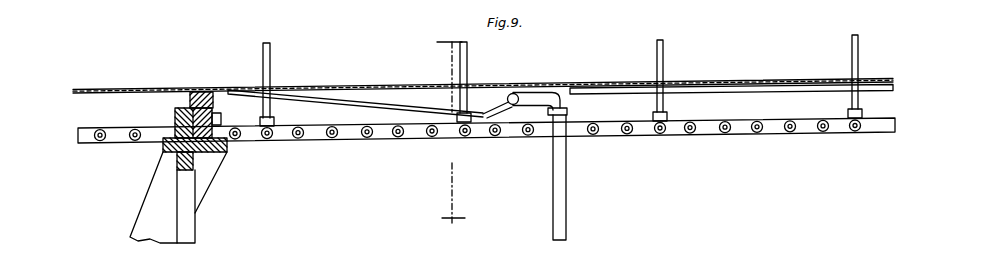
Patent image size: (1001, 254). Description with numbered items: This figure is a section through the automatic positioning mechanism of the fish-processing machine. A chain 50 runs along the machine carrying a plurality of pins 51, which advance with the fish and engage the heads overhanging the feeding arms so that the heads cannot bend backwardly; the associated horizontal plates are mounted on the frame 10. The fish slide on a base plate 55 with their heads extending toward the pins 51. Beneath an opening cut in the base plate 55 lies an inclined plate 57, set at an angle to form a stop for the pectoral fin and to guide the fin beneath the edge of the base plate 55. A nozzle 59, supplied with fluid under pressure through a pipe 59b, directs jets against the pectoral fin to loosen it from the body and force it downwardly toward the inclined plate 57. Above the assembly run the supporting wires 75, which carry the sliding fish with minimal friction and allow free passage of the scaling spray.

The frame 10 is at (454, 133).
The chain 50 is at (712, 129).
The pins 51 is at (271, 58).
The base plate 55 is at (577, 87).
The inclined plate 57 is at (420, 103).
The nozzle 59 is at (533, 99).
The pipe 59b is at (567, 185).
The supporting wires 75 is at (163, 88).